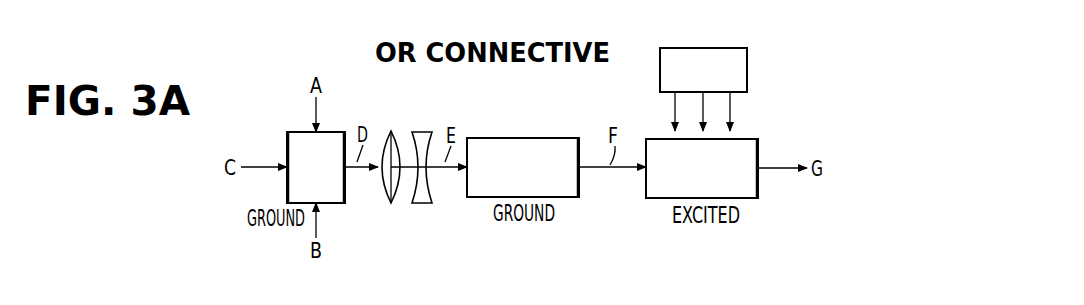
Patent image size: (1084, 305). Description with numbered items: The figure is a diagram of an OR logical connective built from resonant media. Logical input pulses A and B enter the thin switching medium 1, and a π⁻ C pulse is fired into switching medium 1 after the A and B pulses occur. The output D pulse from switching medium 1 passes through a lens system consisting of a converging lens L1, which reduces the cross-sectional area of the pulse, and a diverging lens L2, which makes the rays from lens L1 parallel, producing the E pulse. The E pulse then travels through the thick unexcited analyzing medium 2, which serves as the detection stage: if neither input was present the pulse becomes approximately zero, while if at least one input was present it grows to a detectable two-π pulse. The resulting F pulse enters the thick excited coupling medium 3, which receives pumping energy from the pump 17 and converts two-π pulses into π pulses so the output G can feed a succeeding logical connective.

The switching medium 1 is at (316, 167).
The analyzing medium 2 is at (523, 167).
The coupling medium 3 is at (702, 168).
The pump 17 is at (747, 63).
The converging lens L1 is at (390, 131).
The diverging lens L2 is at (420, 132).